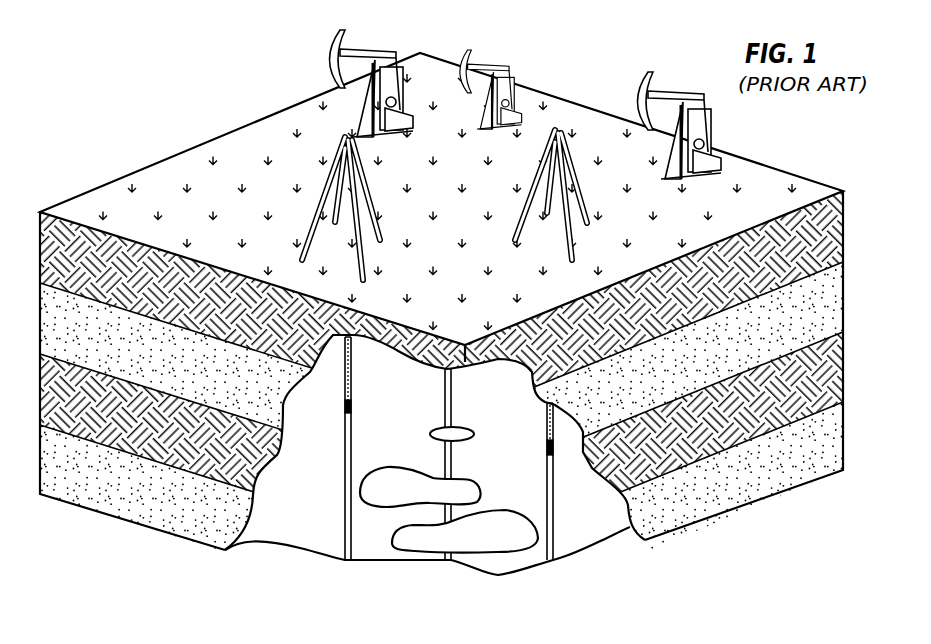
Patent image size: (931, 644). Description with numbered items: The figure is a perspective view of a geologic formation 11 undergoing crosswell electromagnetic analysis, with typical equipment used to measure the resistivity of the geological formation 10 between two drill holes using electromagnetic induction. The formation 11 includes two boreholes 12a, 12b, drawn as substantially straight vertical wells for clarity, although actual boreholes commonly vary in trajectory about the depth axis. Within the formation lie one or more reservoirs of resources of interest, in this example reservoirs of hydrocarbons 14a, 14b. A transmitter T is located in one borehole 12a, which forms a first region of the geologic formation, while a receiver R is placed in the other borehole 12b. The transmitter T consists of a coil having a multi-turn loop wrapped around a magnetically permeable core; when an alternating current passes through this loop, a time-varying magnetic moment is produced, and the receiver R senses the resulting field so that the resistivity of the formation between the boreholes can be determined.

The geological formation 10 is at (515, 490).
The geologic formation 11 is at (178, 108).
The borehole 12a is at (343, 525).
The borehole 12b is at (553, 539).
The reservoir of hydrocarbons 14a is at (417, 497).
The reservoir of hydrocarbons 14b is at (523, 543).
The transmitter T is at (352, 407).
The receiver R is at (547, 447).